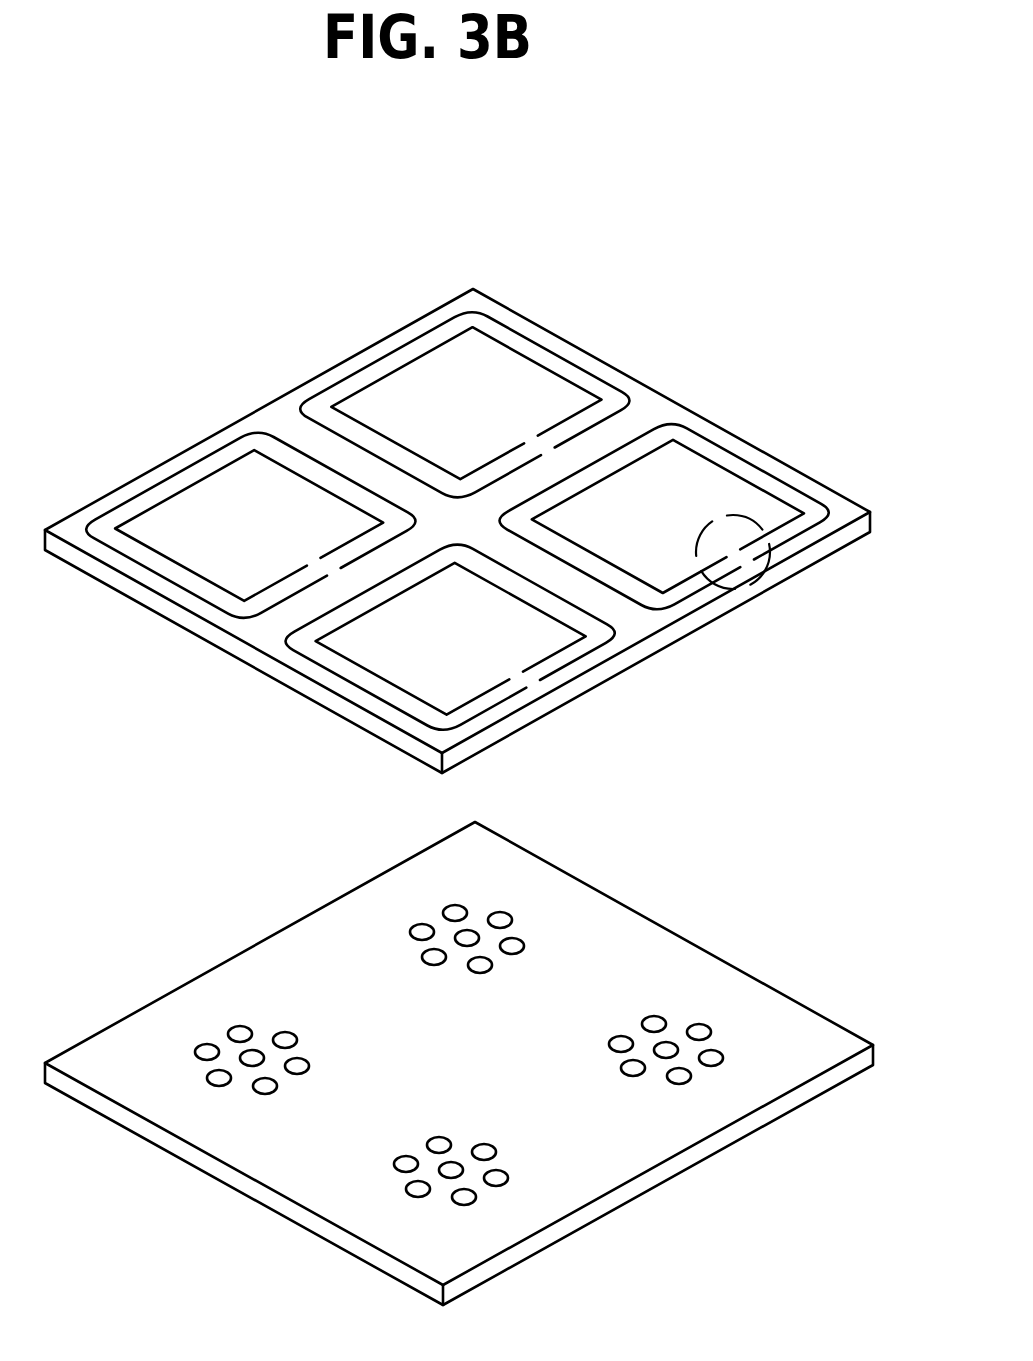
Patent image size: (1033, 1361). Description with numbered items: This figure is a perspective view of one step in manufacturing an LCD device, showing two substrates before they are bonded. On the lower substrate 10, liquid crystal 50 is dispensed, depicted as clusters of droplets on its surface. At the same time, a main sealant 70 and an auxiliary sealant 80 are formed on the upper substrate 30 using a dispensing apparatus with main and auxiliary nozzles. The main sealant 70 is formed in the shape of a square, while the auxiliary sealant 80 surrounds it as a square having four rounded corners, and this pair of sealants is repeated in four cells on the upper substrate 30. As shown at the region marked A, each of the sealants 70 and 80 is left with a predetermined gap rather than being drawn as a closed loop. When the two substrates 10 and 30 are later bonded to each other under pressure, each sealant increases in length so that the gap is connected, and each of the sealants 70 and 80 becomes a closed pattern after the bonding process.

The lower substrate 10 is at (98, 1043).
The upper substrate 30 is at (98, 510).
The liquid crystal 50 is at (238, 1032).
The main sealant 70 is at (197, 482).
The auxiliary sealant 80 is at (238, 435).
The gap region A is at (768, 565).